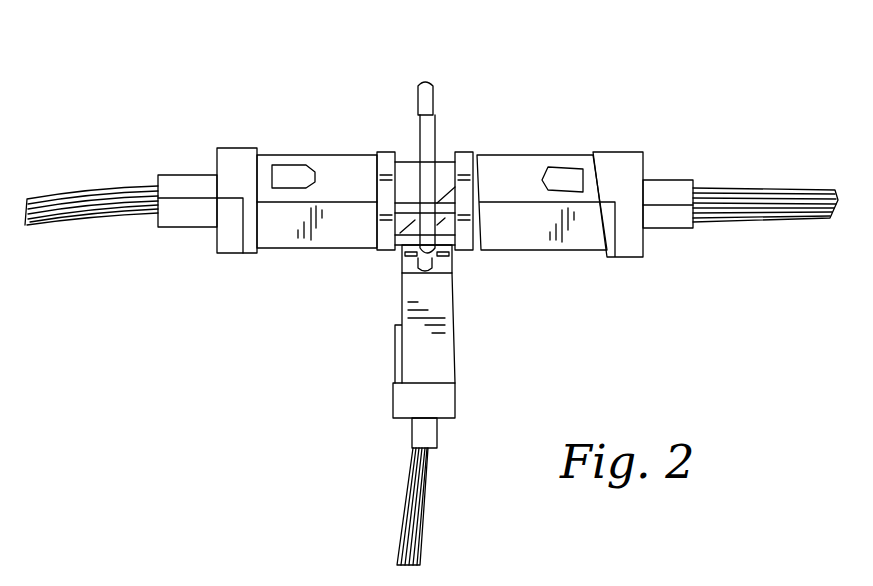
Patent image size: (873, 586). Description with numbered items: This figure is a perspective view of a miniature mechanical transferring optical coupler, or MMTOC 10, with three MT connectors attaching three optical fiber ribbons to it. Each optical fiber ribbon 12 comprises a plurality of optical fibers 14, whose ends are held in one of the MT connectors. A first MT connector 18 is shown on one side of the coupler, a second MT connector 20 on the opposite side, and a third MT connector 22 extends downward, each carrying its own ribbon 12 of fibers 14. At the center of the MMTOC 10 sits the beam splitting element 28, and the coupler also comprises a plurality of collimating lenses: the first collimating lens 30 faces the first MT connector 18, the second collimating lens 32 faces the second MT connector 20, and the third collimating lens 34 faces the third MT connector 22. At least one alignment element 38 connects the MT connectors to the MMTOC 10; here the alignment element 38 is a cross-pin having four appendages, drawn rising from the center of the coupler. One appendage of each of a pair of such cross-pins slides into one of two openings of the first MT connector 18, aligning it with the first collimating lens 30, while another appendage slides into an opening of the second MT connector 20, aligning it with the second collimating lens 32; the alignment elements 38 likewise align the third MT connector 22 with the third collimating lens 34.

The miniature mechanical transferring optical coupler 10 is at (590, 90).
The optical fiber ribbon 12 is at (102, 165).
The optical fiber 14 is at (95, 216).
The first MT connector 18 is at (313, 160).
The second MT connector 20 is at (580, 250).
The third MT connector 22 is at (415, 360).
The beam splitting element 28 is at (407, 193).
The first collimating lens 30 is at (383, 152).
The second collimating lens 32 is at (463, 152).
The third collimating lens 34 is at (443, 265).
The alignment element 38 is at (437, 132).